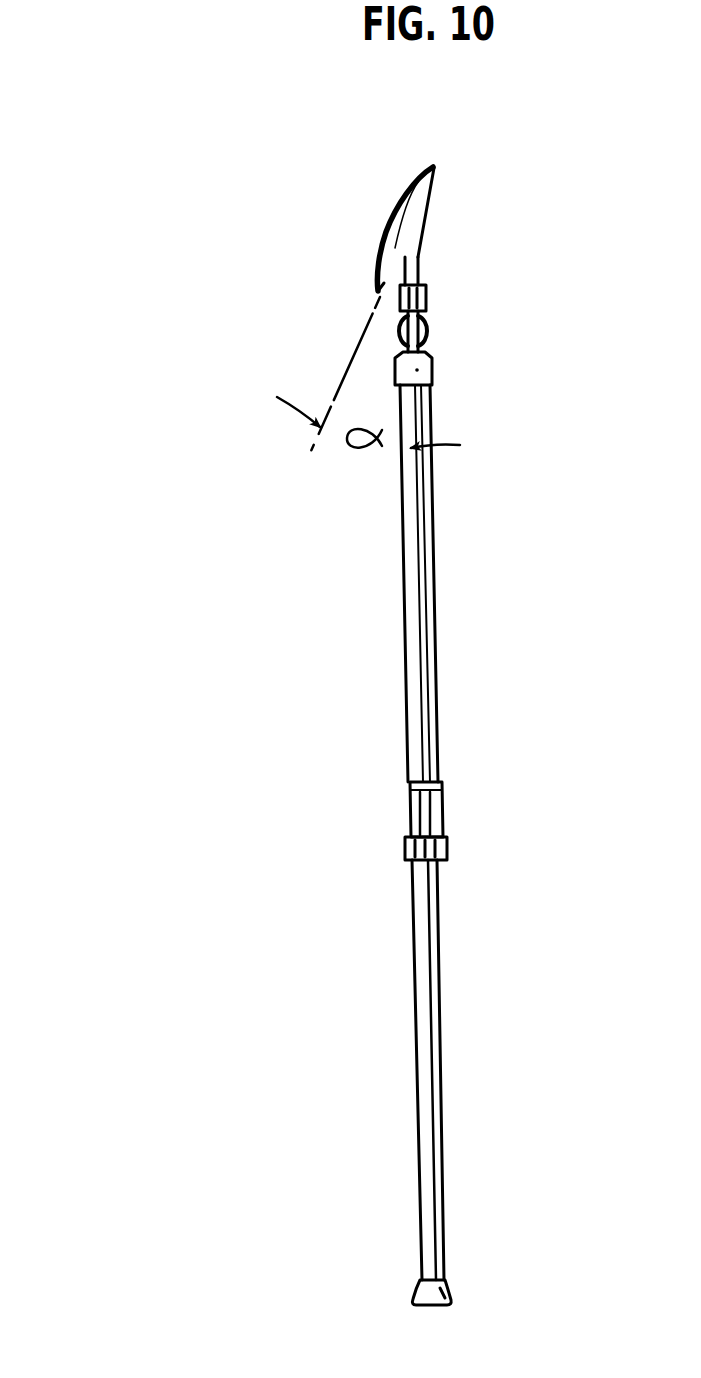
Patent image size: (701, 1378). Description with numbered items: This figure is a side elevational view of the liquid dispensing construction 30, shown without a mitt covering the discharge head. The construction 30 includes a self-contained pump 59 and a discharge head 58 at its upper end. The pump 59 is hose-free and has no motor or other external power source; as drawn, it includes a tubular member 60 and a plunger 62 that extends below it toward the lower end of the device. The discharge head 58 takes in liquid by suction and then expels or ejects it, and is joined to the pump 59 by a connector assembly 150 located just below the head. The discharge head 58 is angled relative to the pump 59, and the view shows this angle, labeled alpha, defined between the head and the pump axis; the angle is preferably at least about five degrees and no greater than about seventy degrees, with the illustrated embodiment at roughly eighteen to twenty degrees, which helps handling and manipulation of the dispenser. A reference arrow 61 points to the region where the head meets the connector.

The liquid dispensing construction 30 is at (125, 148).
The discharge head 58 is at (378, 197).
The blade shank 61 is at (437, 230).
The connector assembly 150 is at (447, 328).
The self-contained pump 59 is at (452, 612).
The tubular member 60 is at (438, 758).
The plunger 62 is at (440, 1140).